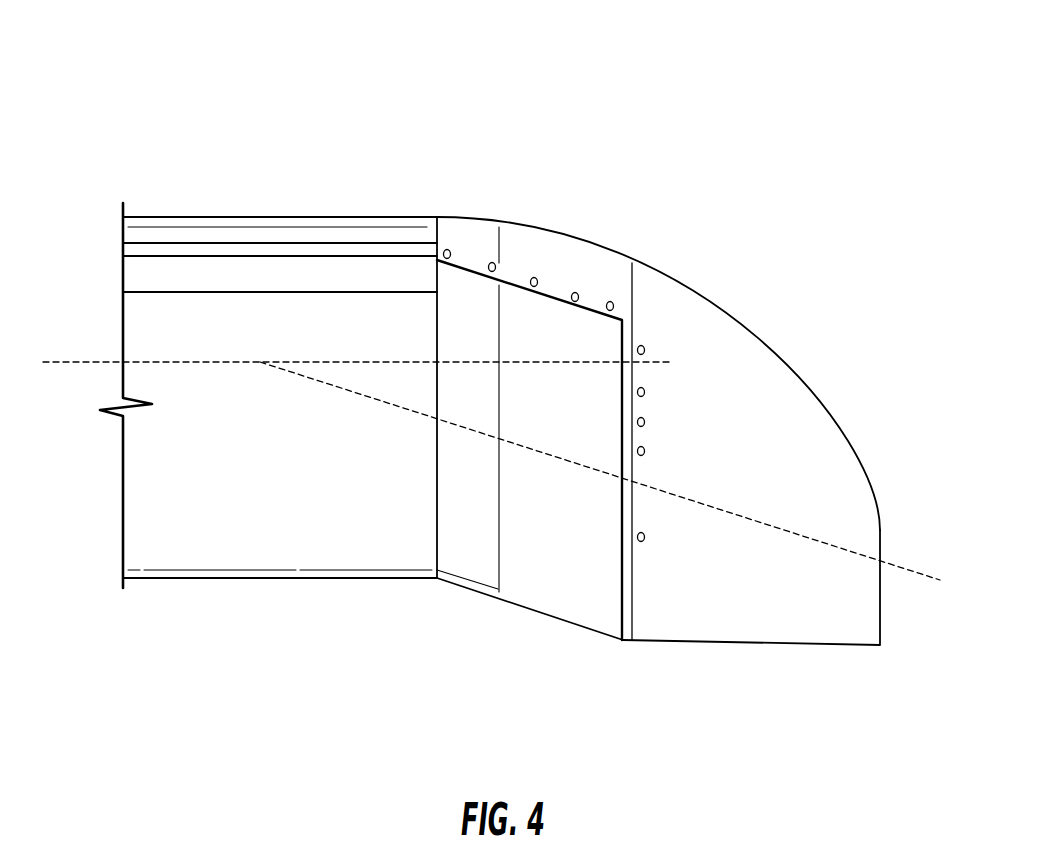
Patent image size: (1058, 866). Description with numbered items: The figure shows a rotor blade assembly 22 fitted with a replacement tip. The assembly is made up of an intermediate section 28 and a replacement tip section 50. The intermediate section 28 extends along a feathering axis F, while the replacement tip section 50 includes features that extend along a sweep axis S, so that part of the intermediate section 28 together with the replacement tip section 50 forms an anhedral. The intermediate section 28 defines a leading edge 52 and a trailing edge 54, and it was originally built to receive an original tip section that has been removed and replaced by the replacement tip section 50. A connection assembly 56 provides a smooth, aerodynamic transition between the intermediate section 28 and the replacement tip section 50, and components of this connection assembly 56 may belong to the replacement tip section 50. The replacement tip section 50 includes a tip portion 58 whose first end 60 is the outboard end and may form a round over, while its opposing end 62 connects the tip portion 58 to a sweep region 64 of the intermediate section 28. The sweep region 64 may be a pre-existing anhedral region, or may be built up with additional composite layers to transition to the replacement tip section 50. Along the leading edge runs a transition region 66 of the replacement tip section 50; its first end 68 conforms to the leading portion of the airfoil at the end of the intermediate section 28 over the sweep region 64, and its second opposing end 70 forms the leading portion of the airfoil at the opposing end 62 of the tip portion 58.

The rotor blade assembly 22 is at (436, 84).
The intermediate section 28 is at (254, 307).
The replacement tip section 50 is at (748, 240).
The leading edge 52 is at (202, 217).
The trailing edge 54 is at (232, 582).
The connection assembly 56 is at (442, 163).
The tip portion 58 is at (758, 410).
The first end 60 is at (880, 527).
The opposing end 62 is at (620, 603).
The sweep region 64 is at (548, 557).
The transition region 66 is at (582, 272).
The first end 68 is at (437, 240).
The second opposing end 70 is at (622, 287).
The feathering axis F is at (107, 363).
The sweep axis S is at (910, 568).